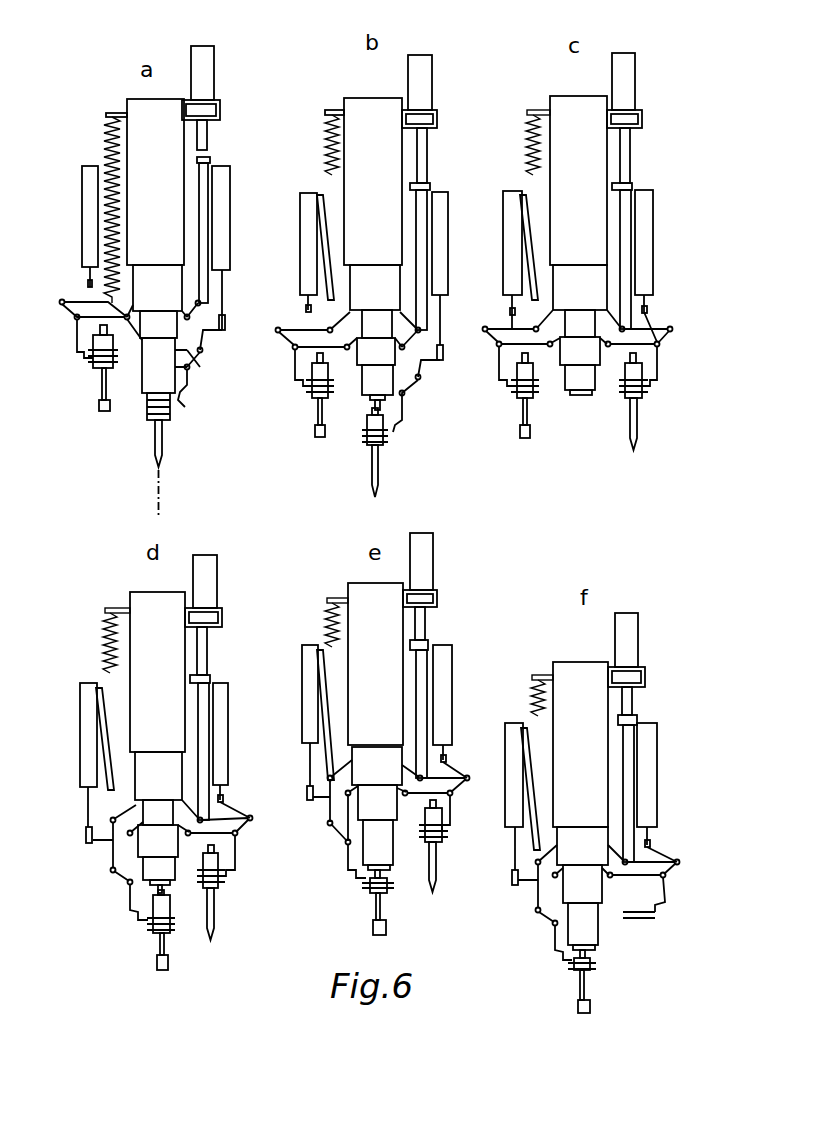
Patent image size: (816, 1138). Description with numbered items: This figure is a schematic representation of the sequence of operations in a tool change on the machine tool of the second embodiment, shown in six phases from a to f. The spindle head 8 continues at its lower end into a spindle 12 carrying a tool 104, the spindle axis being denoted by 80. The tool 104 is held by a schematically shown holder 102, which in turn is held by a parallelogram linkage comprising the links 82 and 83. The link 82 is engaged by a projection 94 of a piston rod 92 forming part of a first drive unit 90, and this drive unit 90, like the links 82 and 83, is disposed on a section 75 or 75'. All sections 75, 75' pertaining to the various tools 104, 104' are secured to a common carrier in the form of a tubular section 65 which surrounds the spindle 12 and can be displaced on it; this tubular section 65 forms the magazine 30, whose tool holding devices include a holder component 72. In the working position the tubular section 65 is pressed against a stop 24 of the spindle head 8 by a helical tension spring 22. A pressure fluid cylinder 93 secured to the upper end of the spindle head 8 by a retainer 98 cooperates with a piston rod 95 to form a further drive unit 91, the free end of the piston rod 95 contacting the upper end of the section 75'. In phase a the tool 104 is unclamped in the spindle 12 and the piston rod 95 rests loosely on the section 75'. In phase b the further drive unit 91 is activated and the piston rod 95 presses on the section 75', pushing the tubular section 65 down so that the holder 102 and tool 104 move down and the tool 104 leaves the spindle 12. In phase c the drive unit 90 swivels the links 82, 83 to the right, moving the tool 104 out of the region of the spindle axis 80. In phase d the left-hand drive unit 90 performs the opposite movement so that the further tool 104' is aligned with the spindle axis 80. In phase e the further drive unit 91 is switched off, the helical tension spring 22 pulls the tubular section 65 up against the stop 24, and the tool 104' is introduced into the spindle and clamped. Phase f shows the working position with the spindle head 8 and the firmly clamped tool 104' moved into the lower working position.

The spindle head 8 is at (138, 104).
The spindle 12 is at (578, 397).
The helical tension spring 22 is at (107, 130).
The stop 24 is at (370, 312).
The magazine 30 is at (338, 812).
The tubular section 65 is at (372, 355).
The holder component 72 is at (333, 205).
The section 75 is at (301, 486).
The section 75' is at (346, 428).
The spindle axis 80 is at (155, 507).
The link 82 is at (66, 300).
The link 83 is at (77, 320).
The first drive unit 90 is at (224, 172).
The further drive unit 91 is at (243, 90).
The piston rod 92 is at (222, 296).
The pressure fluid cylinder 93 is at (207, 58).
The projection 94 is at (224, 330).
The piston rod 95 is at (207, 137).
The retainer 98 is at (185, 100).
The holder 102 is at (178, 397).
The tool 104 is at (414, 648).
The further tool 104' is at (339, 673).